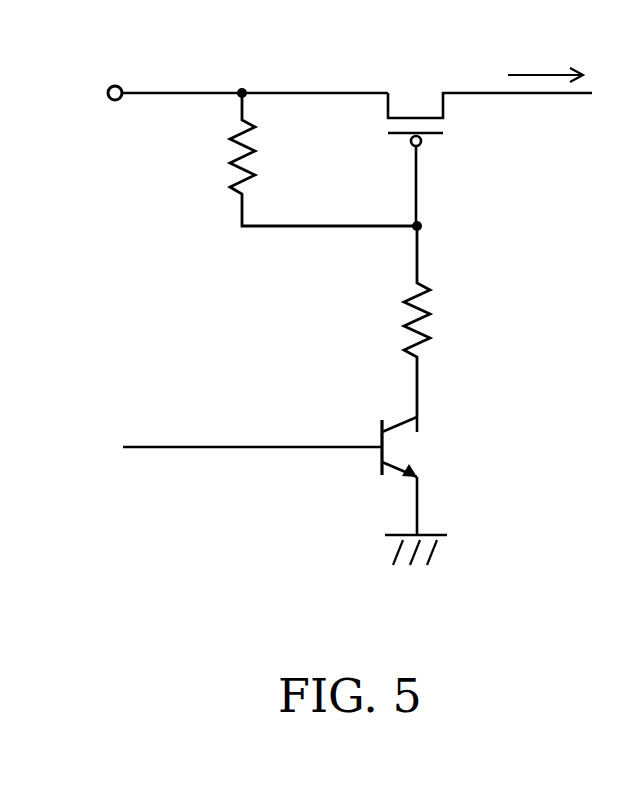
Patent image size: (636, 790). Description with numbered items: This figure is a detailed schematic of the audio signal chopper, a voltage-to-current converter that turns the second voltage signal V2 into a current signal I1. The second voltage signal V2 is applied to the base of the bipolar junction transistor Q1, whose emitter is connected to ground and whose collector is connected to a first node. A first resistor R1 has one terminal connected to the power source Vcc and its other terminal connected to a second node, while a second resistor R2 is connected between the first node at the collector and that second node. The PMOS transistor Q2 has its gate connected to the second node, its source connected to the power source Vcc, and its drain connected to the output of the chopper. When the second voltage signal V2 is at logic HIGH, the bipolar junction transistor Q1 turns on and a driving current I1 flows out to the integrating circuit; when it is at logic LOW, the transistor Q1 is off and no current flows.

The power source Vcc is at (214, 93).
The first resistor R1 is at (228, 154).
The second resistor R2 is at (402, 316).
The bipolar junction transistor Q1 is at (418, 447).
The PMOS transistor Q2 is at (416, 94).
The second voltage signal V2 is at (252, 427).
The current signal I1 is at (545, 59).